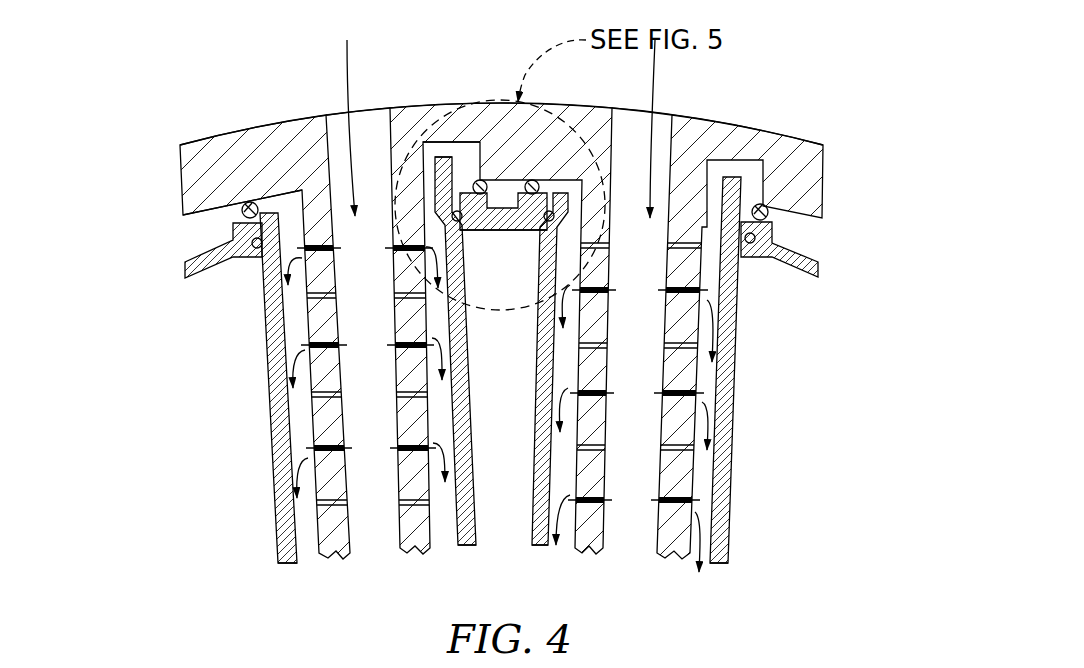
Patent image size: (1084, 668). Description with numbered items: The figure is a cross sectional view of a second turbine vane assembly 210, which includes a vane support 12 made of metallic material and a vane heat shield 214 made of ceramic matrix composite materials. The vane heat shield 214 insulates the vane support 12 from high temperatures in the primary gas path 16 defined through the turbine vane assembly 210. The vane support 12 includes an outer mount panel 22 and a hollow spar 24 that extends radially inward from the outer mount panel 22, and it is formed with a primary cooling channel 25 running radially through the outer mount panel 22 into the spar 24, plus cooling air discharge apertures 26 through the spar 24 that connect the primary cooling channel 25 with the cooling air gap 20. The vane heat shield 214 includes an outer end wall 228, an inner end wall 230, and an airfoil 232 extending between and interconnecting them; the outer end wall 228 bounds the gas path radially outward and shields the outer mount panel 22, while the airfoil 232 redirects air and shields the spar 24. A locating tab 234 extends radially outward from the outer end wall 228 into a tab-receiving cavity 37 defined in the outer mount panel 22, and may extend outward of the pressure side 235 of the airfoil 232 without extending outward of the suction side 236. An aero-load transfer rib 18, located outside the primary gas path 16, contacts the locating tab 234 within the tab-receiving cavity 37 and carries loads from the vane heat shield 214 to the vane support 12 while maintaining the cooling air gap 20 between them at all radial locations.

The second turbine vane assembly 210 is at (142, 97).
The vane support 12 is at (168, 200).
The primary gas path 16 is at (246, 381).
The aero-load transfer rib 18 is at (430, 146).
The cooling air gap 20 is at (283, 546).
The outer mount panel 22 is at (820, 143).
The spar 24 is at (310, 390).
The primary cooling channel 25 is at (358, 146).
The cooling air discharge apertures 26 is at (716, 458).
The tab-receiving cavity 37 is at (462, 154).
The vane heat shield 214 is at (180, 381).
The outer end wall 228 is at (203, 278).
The inner end wall 230 is at (498, 232).
The airfoil 232 is at (265, 409).
The locating tab 234 is at (487, 181).
The pressure side 235 is at (468, 412).
The suction side 236 is at (273, 496).